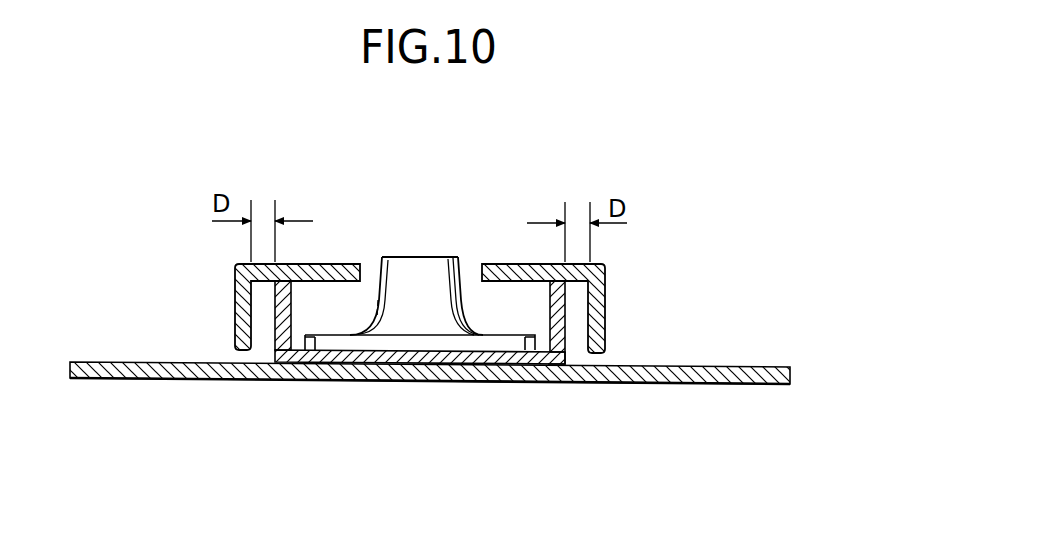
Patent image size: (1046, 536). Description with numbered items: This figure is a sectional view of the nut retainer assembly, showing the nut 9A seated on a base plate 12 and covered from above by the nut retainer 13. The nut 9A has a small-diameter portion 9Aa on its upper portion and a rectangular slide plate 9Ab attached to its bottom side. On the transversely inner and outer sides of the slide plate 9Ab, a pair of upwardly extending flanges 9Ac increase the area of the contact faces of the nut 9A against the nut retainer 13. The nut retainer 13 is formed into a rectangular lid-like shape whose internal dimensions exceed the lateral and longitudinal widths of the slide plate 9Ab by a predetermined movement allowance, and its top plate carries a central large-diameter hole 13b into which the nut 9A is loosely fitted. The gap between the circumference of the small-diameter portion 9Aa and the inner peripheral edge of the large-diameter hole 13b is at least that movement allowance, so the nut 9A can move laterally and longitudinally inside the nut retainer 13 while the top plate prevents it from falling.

The plate (panel) 12 is at (672, 385).
The nut 9A is at (425, 342).
The small-diameter portion 9Aa is at (435, 272).
The slide plate 9Ab is at (573, 367).
The upwardly extending flanges 9Ac is at (278, 310).
The nut retainer 13 is at (325, 262).
The large-diameter hole 13b is at (482, 270).